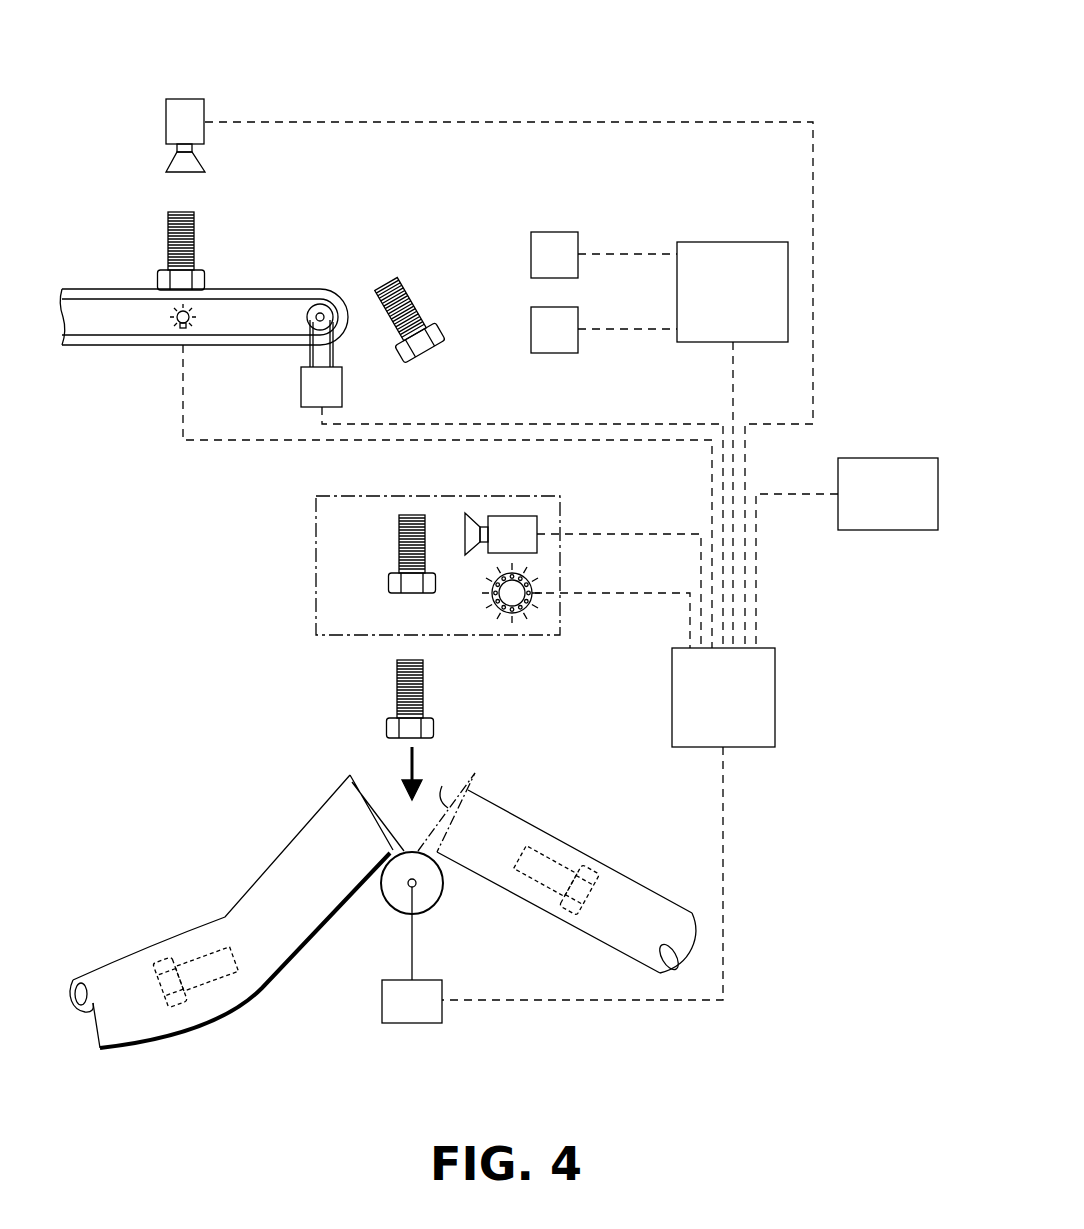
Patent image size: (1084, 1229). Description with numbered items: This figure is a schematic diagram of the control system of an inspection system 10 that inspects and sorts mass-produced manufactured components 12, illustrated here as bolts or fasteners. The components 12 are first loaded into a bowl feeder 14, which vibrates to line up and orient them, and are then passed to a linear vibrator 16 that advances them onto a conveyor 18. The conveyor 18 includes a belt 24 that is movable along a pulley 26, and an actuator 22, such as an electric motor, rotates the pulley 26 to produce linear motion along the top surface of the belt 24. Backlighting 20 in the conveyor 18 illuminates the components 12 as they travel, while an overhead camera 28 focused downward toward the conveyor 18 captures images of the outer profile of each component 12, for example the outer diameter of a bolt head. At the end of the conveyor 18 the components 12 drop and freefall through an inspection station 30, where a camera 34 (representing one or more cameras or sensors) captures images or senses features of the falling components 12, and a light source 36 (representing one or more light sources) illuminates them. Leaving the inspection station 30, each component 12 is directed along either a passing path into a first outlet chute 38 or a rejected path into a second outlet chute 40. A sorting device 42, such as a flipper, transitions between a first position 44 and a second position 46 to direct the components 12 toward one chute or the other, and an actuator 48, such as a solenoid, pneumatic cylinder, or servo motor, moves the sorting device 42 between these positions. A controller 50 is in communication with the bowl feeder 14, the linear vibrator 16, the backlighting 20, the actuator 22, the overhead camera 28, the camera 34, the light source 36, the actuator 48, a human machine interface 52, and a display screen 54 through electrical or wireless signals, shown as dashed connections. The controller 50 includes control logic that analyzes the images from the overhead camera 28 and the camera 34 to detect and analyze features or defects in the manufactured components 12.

The inspection system 10 is at (774, 64).
The manufactured components 12 is at (168, 245).
The bowl feeder 14 is at (543, 232).
The linear vibrator 16 is at (543, 353).
The conveyor 18 is at (270, 280).
The backlighting 20 is at (178, 322).
The actuator 22 is at (301, 390).
The belt 24 is at (317, 292).
The pulley 26 is at (293, 308).
The overhead camera 28 is at (166, 123).
The inspection station 30 is at (465, 496).
The cameras 34 is at (515, 516).
The light source 36 is at (512, 615).
The first outlet chute 38 is at (297, 842).
The second outlet chute 40 is at (627, 870).
The sorting device 42 is at (420, 815).
The first position 44 is at (373, 793).
The second position 46 is at (448, 790).
The actuator 48 is at (393, 980).
The controller 50 is at (765, 648).
The human machine interface 52 is at (705, 242).
The display screen 54 is at (853, 458).